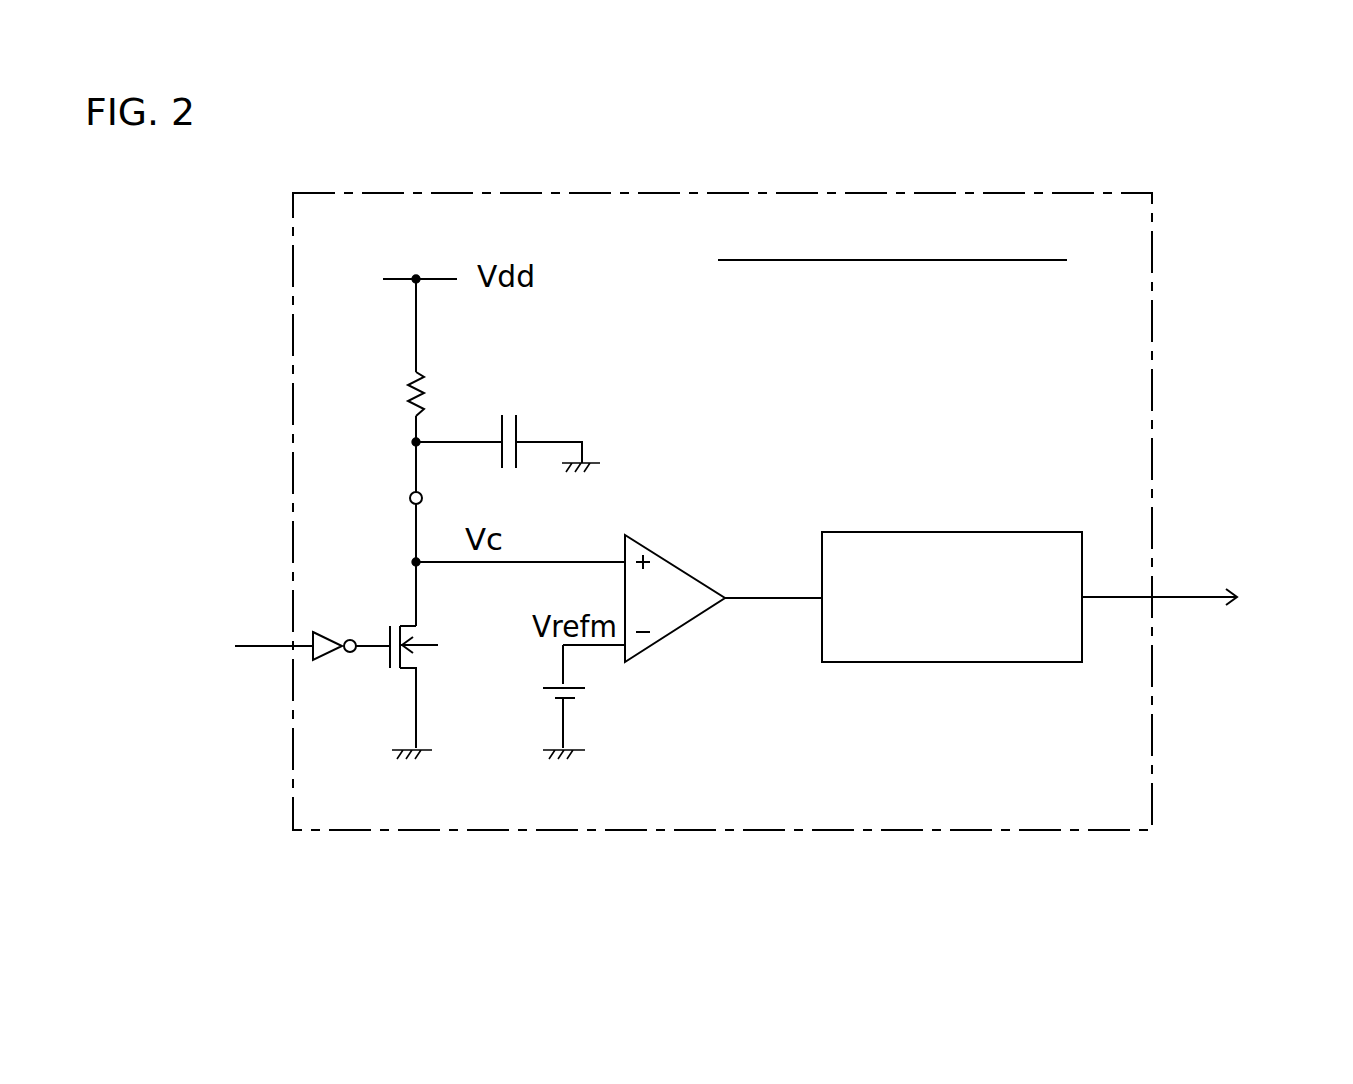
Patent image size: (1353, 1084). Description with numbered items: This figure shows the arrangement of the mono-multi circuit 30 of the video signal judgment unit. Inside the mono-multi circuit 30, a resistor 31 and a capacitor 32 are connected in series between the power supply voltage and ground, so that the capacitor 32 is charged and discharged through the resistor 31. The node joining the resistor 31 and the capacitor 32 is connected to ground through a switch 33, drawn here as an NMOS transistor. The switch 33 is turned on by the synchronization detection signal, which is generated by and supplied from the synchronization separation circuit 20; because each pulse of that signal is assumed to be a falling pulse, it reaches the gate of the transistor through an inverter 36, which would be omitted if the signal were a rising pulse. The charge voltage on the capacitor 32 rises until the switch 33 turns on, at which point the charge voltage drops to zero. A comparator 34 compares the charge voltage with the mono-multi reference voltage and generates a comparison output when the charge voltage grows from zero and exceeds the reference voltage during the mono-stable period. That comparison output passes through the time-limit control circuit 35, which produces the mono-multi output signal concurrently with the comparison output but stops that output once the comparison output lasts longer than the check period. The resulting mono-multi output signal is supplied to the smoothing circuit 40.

The mono-multi circuit 30 is at (1167, 301).
The resistor 31 is at (394, 397).
The capacitor 32 is at (507, 401).
The switch 33 is at (430, 636).
The comparator 34 is at (668, 553).
The time-limit control circuit 35 is at (908, 525).
The inverter 36 is at (324, 629).
The synchronization separation circuit 20 is at (183, 637).
The smoothing circuit 40 is at (1210, 583).